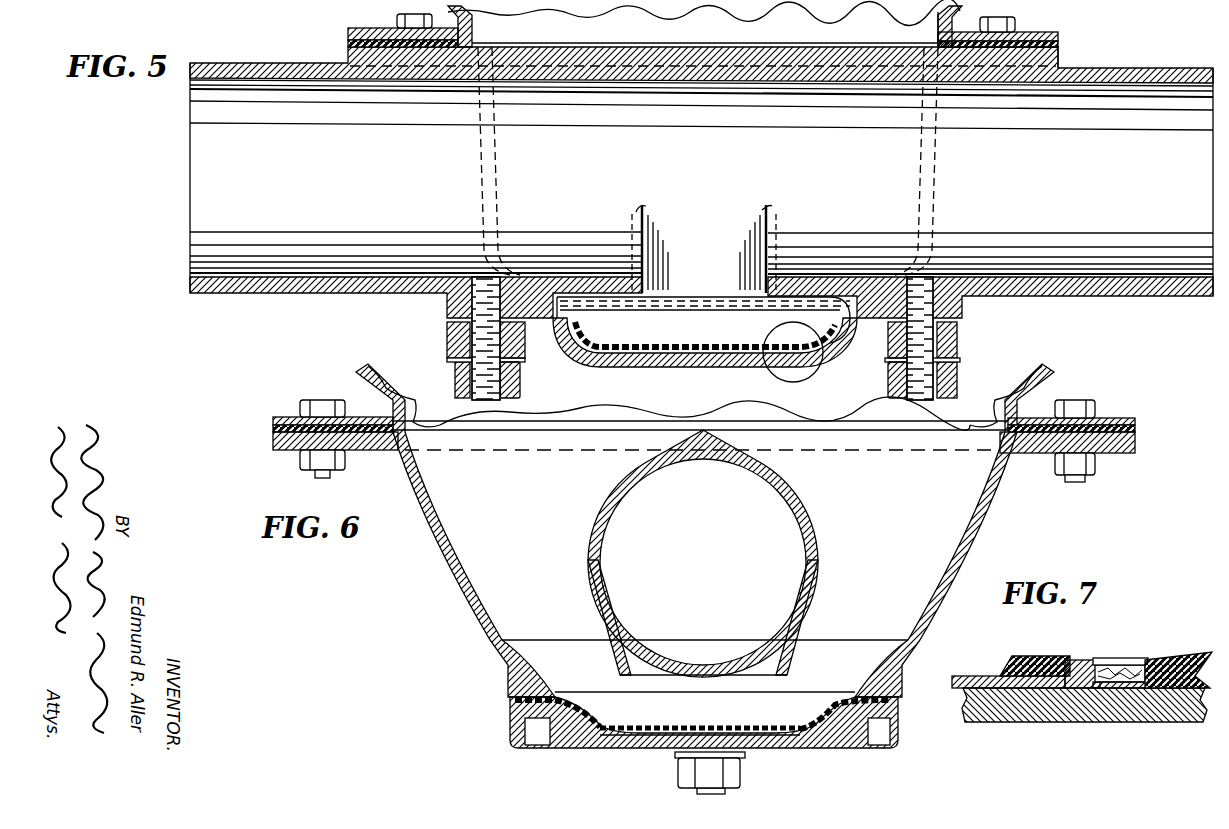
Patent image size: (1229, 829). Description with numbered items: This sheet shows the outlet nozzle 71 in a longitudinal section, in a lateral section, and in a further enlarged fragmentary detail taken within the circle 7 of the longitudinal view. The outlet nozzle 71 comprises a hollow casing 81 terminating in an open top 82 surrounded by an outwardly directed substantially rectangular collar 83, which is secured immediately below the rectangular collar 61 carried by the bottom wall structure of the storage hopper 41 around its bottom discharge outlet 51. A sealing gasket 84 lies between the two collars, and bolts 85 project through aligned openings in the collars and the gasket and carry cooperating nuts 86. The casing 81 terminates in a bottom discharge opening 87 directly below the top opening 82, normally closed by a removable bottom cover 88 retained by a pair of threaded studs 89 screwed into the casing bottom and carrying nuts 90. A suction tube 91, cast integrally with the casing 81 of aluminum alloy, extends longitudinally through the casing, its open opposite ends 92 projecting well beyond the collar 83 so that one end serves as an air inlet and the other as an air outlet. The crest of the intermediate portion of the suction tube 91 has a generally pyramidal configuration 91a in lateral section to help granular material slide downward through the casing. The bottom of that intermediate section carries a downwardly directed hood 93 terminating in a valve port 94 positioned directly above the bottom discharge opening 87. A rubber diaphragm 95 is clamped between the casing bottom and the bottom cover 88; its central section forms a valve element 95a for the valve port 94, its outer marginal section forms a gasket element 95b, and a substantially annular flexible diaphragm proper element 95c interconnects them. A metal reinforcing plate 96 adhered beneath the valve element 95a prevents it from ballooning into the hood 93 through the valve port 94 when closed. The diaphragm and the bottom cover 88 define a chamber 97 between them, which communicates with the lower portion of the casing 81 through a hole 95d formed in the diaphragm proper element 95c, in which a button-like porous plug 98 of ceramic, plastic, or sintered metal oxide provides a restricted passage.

In FIG. 5, the detail circle 7 is at (763, 378).
In FIG. 5, the storage hopper 41 is at (520, 12).
In FIG. 6, the storage hopper 41 is at (400, 398).
In FIG. 5, the bottom discharge outlet 51 is at (705, 29).
In FIG. 5, the rectangular collar 61 is at (348, 34).
In FIG. 6, the rectangular collar 61 is at (298, 417).
In FIG. 5, the outlet nozzle 71 is at (304, 302).
In FIG. 6, the outlet nozzle 71 is at (442, 596).
In FIG. 5, the hollow casing 81 is at (932, 200).
In FIG. 6, the hollow casing 81 is at (965, 540).
In FIG. 6, the open top 82 is at (437, 440).
In FIG. 5, the rectangular collar 83 is at (1058, 60).
In FIG. 6, the rectangular collar 83 is at (273, 441).
In FIG. 5, the sealing gasket 84 is at (1058, 44).
In FIG. 6, the sealing gasket 84 is at (273, 421).
In FIG. 5, the bolt 85 is at (1005, 22).
In FIG. 6, the bolt 85 is at (345, 404).
In FIG. 6, the nut 86 is at (310, 462).
In FIG. 6, the bottom discharge opening 87 is at (848, 690).
In FIG. 5, the bottom cover 88 is at (580, 367).
In FIG. 6, the bottom cover 88 is at (898, 720).
In FIG. 7, the bottom cover 88 is at (1150, 712).
In FIG. 5, the threaded stud 89 is at (462, 378).
In FIG. 6, the threaded stud 89 is at (697, 791).
In FIG. 5, the nut 90 is at (520, 380).
In FIG. 6, the nut 90 is at (738, 766).
In FIG. 5, the suction tube 91 is at (806, 147).
In FIG. 6, the suction tube 91 is at (796, 500).
In FIG. 5, the pyramidal crest 91a is at (790, 146).
In FIG. 6, the pyramidal crest 91a is at (706, 428).
In FIG. 5, the tube end 92 is at (214, 63).
In FIG. 5, the hood 93 is at (648, 277).
In FIG. 6, the hood 93 is at (620, 668).
In FIG. 5, the valve port 94 is at (698, 298).
In FIG. 6, the valve port 94 is at (765, 670).
In FIG. 6, the diaphragm 95 is at (587, 710).
In FIG. 6, the valve element 95a is at (736, 724).
In FIG. 7, the valve element 95a is at (1028, 660).
In FIG. 6, the gasket element 95b is at (515, 705).
In FIG. 6, the diaphragm proper element 95c is at (810, 729).
In FIG. 7, the diaphragm proper element 95c is at (1192, 660).
In FIG. 7, the hole 95d is at (1130, 662).
In FIG. 6, the metal reinforcing plate 96 is at (673, 728).
In FIG. 7, the metal reinforcing plate 96 is at (978, 676).
In FIG. 6, the chamber 97 is at (610, 735).
In FIG. 7, the chamber 97 is at (1082, 660).
In FIG. 7, the porous plug 98 is at (1120, 668).